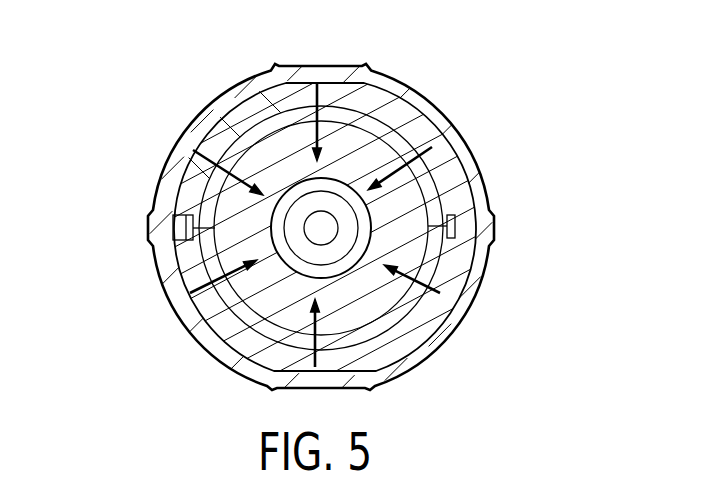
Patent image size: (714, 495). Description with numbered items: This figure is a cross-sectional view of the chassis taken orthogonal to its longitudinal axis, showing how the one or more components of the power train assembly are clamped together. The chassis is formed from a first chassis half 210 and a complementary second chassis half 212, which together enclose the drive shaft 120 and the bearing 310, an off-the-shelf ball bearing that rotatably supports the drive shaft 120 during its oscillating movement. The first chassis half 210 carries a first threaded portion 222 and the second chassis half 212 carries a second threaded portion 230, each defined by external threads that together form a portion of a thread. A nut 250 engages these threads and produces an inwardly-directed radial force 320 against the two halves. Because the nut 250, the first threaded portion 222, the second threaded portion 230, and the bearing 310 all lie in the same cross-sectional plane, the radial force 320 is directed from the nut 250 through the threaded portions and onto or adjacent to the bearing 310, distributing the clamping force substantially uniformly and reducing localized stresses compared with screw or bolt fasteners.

The drive shaft 120 is at (348, 231).
The first chassis half 210 is at (260, 116).
The second chassis half 212 is at (222, 318).
The first threaded portion 222 is at (382, 112).
The second threaded portion 230 is at (365, 340).
The nut 250 is at (457, 155).
The bearing 310 is at (222, 203).
The radial force 320 is at (309, 98).